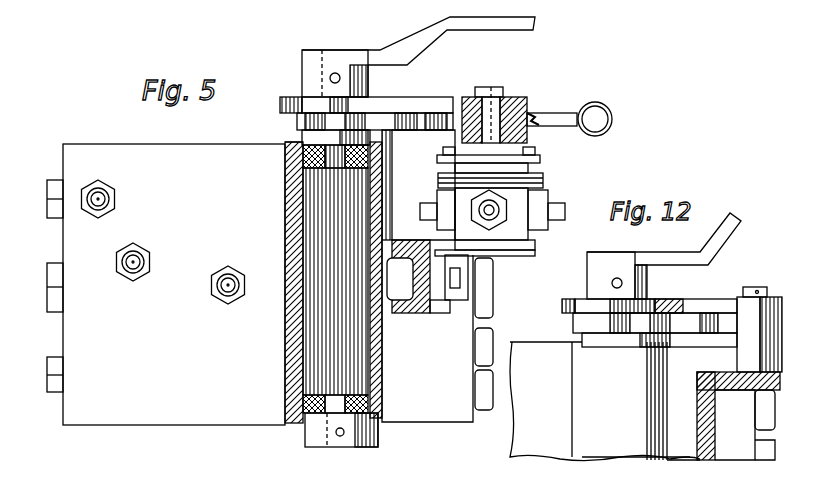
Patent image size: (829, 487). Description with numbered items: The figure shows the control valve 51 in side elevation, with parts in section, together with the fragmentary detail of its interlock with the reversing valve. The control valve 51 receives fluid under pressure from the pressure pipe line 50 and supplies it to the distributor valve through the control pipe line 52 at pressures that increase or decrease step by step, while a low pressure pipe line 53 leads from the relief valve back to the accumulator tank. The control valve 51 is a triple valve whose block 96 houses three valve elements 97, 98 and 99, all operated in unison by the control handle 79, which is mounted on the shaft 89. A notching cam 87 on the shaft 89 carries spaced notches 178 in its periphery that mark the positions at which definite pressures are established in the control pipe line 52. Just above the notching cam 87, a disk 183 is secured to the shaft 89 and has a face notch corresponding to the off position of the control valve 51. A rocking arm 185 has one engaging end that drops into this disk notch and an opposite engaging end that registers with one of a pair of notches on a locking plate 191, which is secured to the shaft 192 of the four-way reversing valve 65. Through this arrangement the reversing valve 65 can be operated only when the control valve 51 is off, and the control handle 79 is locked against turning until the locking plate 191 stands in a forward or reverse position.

In FIG. 5, the control valve 51 is at (123, 138).
In FIG. 5, the pressure pipe line 50 is at (110, 192).
In FIG. 5, the control pipe line 52 is at (146, 244).
In FIG. 5, the low pressure pipe line 53 is at (240, 266).
In FIG. 5, the valve element 97 is at (47, 182).
In FIG. 5, the valve element 98 is at (49, 284).
In FIG. 5, the valve element 99 is at (49, 375).
In FIG. 5, the block 96 is at (263, 124).
In FIG. 5, the notching cam 87 is at (300, 122).
In FIG. 12, the notching cam 87 is at (697, 343).
In FIG. 5, the shaft 89 is at (306, 440).
In FIG. 12, the shaft 89 is at (652, 485).
In FIG. 5, the disk 183 is at (290, 100).
In FIG. 12, the disk 183 is at (580, 302).
In FIG. 5, the rocking arm 185 is at (382, 116).
In FIG. 12, the rocking arm 185 is at (647, 308).
In FIG. 5, the control handle 79 is at (432, 39).
In FIG. 12, the control handle 79 is at (716, 245).
In FIG. 5, the locking plate 191 is at (456, 95).
In FIG. 5, the shaft 192 is at (474, 97).
In FIG. 5, the 4-way valve 65 is at (543, 176).
In FIG. 5, the notches 178 is at (410, 130).